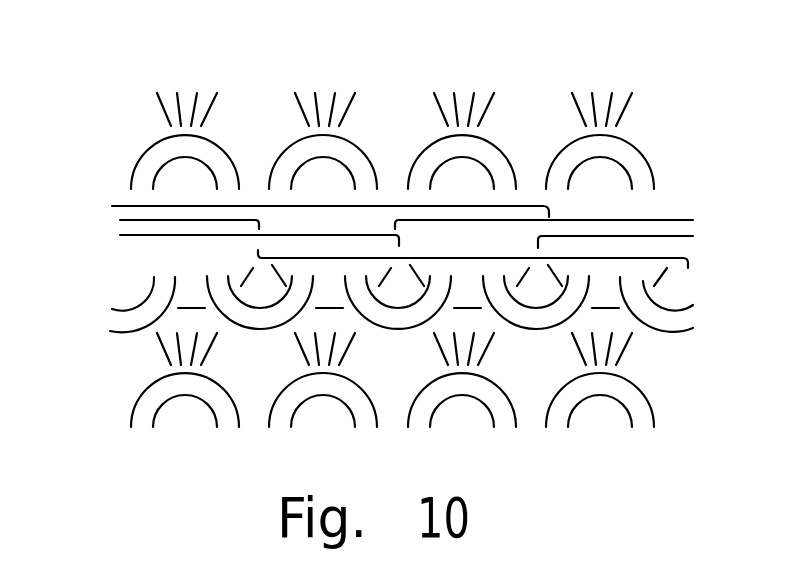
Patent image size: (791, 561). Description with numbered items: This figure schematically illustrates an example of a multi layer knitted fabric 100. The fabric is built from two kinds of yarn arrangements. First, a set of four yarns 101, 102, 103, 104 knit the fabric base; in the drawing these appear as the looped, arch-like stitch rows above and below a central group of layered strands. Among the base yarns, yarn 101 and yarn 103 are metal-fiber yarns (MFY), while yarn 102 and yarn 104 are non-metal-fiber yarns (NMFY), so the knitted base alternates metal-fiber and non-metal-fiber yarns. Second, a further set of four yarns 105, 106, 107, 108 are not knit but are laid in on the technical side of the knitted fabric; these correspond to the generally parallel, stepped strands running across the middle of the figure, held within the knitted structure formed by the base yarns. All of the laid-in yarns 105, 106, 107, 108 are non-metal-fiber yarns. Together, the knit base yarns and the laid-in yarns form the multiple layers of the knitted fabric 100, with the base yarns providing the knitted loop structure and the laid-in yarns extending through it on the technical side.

The multi layer knitted fabric 100 is at (527, 145).
The yarn 101 is at (610, 100).
The yarn 102 is at (623, 117).
The yarn 103 is at (630, 175).
The yarn 104 is at (655, 188).
The laid-in yarn 105 is at (126, 205).
The laid-in yarn 106 is at (120, 220).
The laid-in yarn 107 is at (120, 235).
The laid-in yarn 108 is at (152, 283).